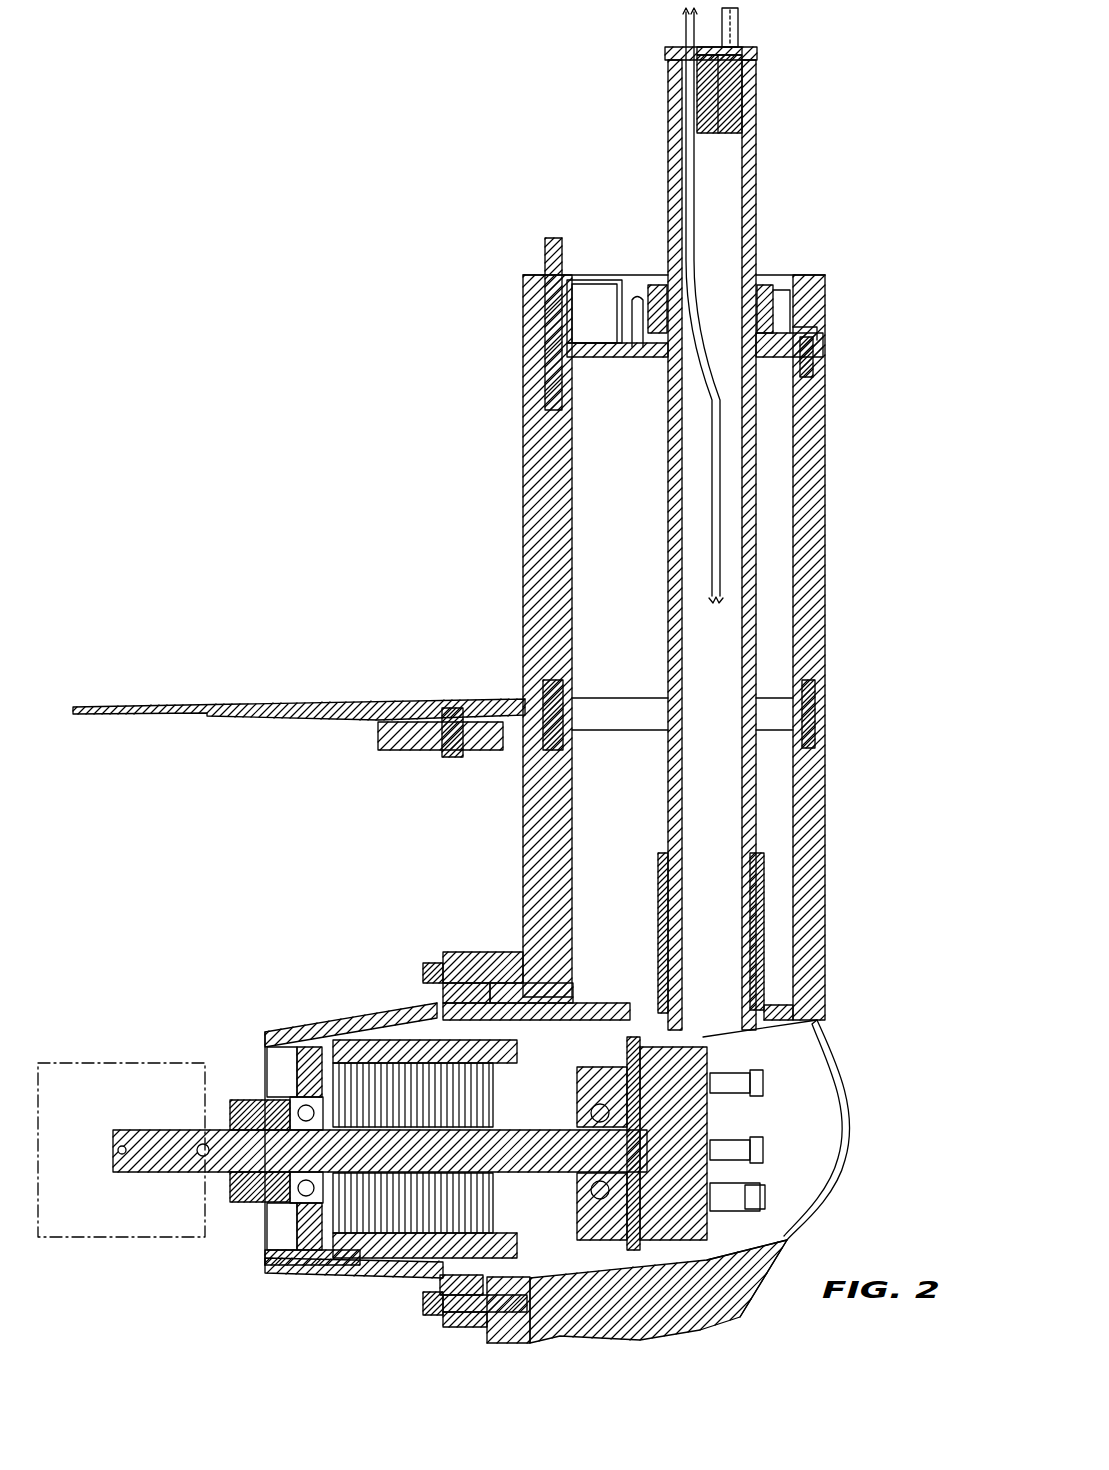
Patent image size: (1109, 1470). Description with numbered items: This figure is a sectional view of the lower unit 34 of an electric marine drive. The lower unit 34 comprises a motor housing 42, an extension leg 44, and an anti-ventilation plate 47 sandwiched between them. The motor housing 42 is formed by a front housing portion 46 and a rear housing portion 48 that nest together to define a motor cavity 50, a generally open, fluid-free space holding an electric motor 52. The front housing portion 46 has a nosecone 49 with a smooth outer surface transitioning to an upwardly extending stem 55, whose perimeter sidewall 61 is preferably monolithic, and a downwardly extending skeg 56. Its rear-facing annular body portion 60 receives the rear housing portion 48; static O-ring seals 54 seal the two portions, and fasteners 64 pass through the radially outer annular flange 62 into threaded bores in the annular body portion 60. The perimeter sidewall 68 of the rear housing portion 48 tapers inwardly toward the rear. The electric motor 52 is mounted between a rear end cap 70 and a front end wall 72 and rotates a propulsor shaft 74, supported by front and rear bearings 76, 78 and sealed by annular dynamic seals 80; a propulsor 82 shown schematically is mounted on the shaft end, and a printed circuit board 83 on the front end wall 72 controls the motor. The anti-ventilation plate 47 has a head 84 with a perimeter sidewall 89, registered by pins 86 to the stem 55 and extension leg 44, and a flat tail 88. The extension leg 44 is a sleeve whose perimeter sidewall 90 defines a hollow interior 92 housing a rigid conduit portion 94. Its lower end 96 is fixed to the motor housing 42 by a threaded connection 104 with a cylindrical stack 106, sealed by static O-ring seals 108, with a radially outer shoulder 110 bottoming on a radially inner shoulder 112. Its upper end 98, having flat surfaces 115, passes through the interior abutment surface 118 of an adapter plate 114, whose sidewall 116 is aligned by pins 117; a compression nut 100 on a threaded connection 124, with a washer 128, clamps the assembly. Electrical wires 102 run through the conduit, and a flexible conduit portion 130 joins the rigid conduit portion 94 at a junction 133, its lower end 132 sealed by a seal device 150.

The lower unit 34 is at (225, 348).
The motor housing 42 is at (355, 1285).
The extension leg 44 is at (868, 528).
The front housing portion 46 is at (852, 1110).
The anti-ventilation plate 47 is at (96, 690).
The rear housing portion 48 is at (300, 1273).
The nosecone 49 is at (832, 1198).
The motor cavity 50 is at (548, 1232).
The electric motor 52 is at (415, 1262).
The static O-ring seals 54 is at (540, 958).
The stem 55 is at (826, 893).
The skeg 56 is at (752, 1295).
The rear-facing annular body portion 60 is at (522, 962).
The perimeter sidewall 61 is at (826, 792).
The radially outer annular flange 62 is at (452, 950).
The fasteners 64 is at (428, 966).
The perimeter sidewall 68 is at (292, 1035).
The rear end cap 70 is at (240, 1097).
The front end wall 72 is at (668, 1024).
The propulsor shaft 74 is at (288, 1250).
The front bearing 76 is at (580, 1115).
The rear bearing 78 is at (302, 1162).
The annular dynamic seals 80 is at (258, 1100).
The propulsor 82 is at (92, 1063).
The printed circuit board 83 is at (660, 1195).
The head 84 is at (828, 703).
The pins 86 is at (543, 700).
The tail 88 is at (292, 699).
The perimeter sidewall 89 is at (820, 720).
The perimeter sidewall 90 is at (813, 610).
The hollow interior 92 is at (674, 647).
The rigid conduit portion 94 is at (752, 590).
The lower end 96 is at (766, 945).
The upper end 98 is at (758, 205).
The compression nut 100 is at (772, 312).
The electrical wires 102 is at (688, 160).
The threaded connection 104 is at (762, 1005).
The cylindrical stack 106 is at (772, 965).
The static O-ring seals 108 is at (760, 870).
The radially outer shoulder 110 is at (664, 950).
The radially inner shoulder 112 is at (662, 962).
The adapter plate 114 is at (832, 335).
The flat surfaces 115 is at (750, 82).
The sidewall 116 is at (826, 296).
The pins 117 is at (553, 320).
The interior abutment surface 118 is at (650, 290).
The threaded connection 124 is at (785, 300).
The washer 128 is at (652, 350).
The flexible conduit portion 130 is at (742, 27).
The lower end 132 is at (748, 52).
The junction 133 is at (655, 72).
The seal device 150 is at (748, 97).